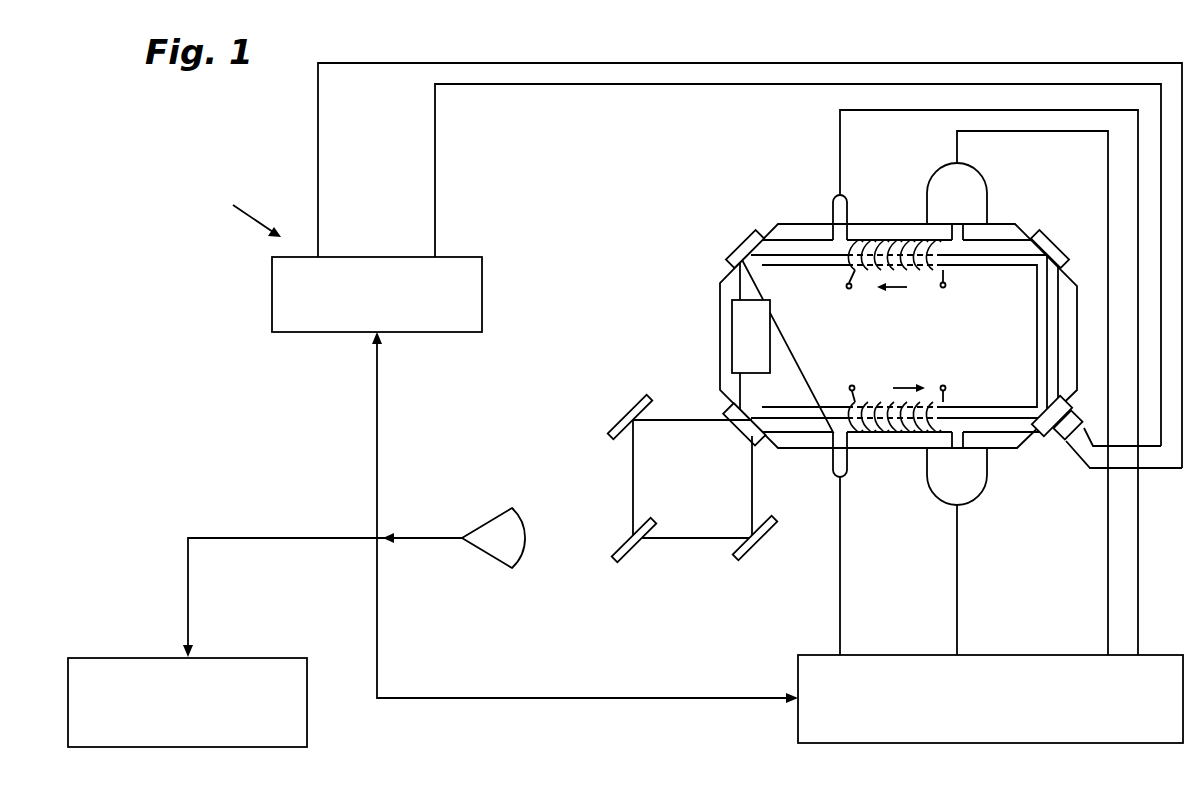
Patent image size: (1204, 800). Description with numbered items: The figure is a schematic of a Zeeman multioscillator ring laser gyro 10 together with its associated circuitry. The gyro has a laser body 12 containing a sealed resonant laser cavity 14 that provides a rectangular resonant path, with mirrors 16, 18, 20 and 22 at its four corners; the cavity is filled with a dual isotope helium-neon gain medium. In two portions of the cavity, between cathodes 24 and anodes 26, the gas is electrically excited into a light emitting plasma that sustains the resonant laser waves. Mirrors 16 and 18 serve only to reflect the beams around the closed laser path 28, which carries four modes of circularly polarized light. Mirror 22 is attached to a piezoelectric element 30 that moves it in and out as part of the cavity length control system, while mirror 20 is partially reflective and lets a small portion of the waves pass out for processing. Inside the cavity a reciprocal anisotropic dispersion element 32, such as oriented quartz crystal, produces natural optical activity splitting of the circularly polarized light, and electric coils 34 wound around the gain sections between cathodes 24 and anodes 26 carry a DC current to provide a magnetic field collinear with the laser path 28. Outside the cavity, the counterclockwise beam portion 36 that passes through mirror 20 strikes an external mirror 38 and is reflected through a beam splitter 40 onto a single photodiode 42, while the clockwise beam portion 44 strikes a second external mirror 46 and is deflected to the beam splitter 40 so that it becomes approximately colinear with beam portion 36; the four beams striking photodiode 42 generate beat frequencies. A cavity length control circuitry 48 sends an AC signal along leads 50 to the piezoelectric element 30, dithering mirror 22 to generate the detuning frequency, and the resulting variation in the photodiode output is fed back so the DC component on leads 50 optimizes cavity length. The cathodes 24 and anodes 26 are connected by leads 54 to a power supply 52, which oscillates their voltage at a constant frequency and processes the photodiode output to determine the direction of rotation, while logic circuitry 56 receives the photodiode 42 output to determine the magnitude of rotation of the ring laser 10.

The Zeeman multioscillator ring laser gyro 10 is at (243, 211).
The laser body 12 is at (910, 342).
The sealed resonant laser cavity 14 is at (1037, 338).
The mirror 16 is at (1055, 240).
The mirror 18 is at (738, 245).
The partially reflective mirror 20 is at (739, 436).
The mirror 22 is at (1045, 442).
The cathode 24 is at (988, 187).
The anode 26 is at (828, 208).
The closed laser path 28 is at (750, 283).
The piezoelectric element 30 is at (1065, 443).
The reciprocal anisotropic dispersion element 32 is at (732, 342).
The electric coil 34 is at (897, 240).
The counterclockwise beam portion 36 is at (755, 468).
The external mirror 38 is at (755, 548).
The beam splitter 40 is at (632, 553).
The photodiode 42 is at (520, 557).
The clockwise beam portion 44 is at (673, 422).
The second external mirror 46 is at (623, 416).
The cavity length control circuitry 48 is at (460, 333).
The leads 50 is at (435, 147).
The power supply 52 is at (797, 720).
The leads 54 is at (957, 136).
The logic circuitry 56 is at (107, 658).